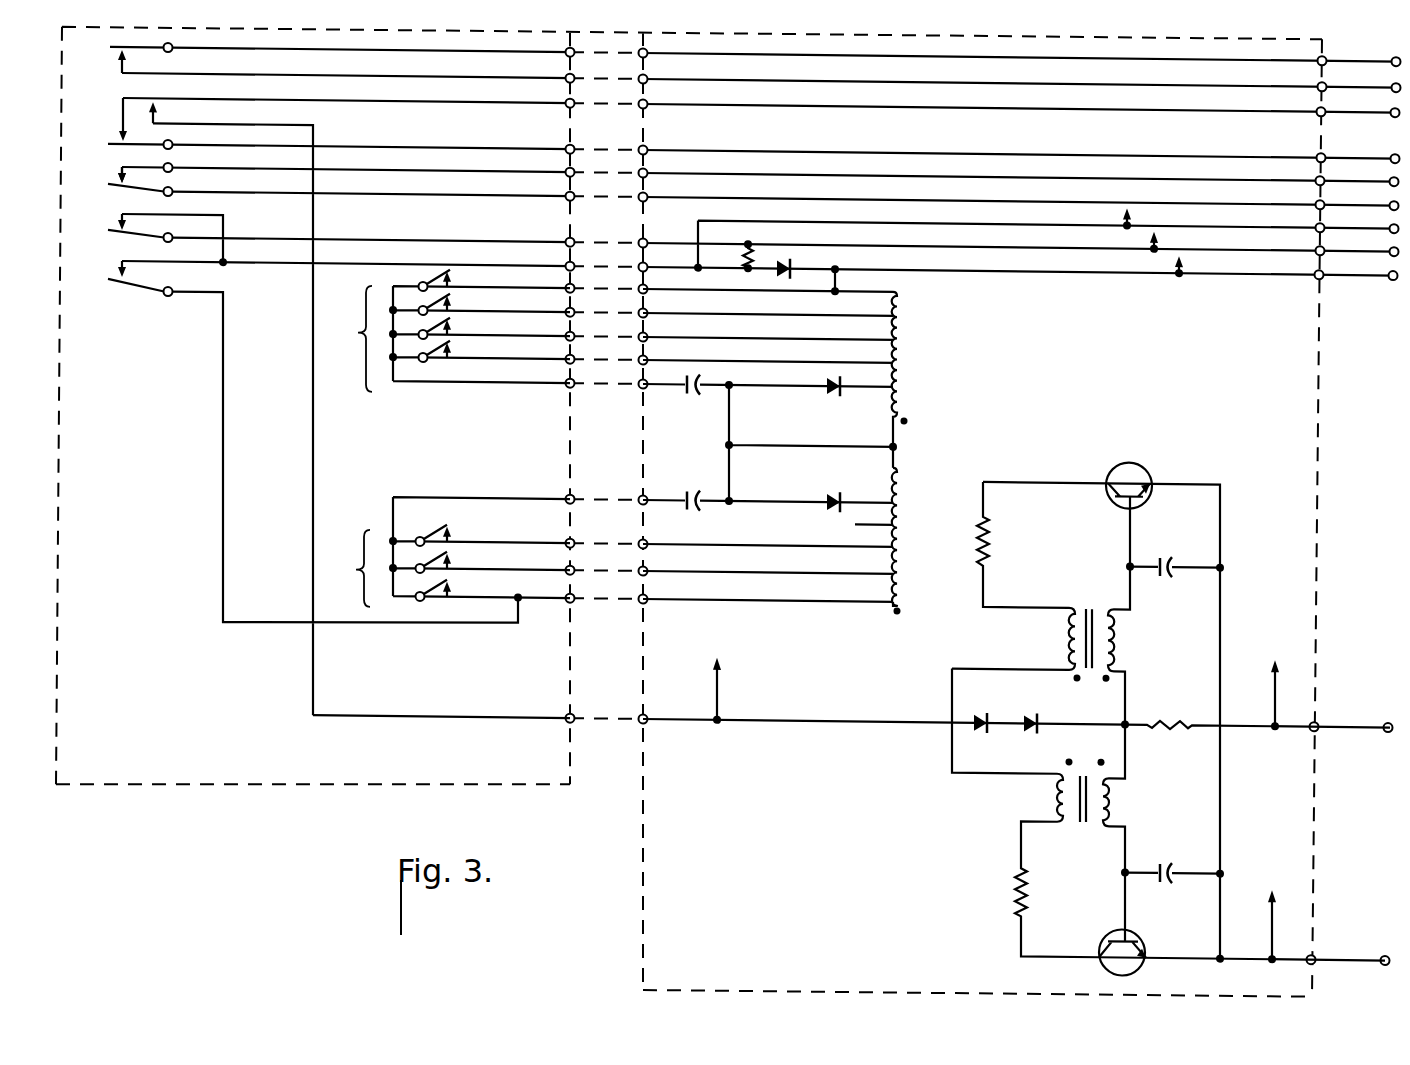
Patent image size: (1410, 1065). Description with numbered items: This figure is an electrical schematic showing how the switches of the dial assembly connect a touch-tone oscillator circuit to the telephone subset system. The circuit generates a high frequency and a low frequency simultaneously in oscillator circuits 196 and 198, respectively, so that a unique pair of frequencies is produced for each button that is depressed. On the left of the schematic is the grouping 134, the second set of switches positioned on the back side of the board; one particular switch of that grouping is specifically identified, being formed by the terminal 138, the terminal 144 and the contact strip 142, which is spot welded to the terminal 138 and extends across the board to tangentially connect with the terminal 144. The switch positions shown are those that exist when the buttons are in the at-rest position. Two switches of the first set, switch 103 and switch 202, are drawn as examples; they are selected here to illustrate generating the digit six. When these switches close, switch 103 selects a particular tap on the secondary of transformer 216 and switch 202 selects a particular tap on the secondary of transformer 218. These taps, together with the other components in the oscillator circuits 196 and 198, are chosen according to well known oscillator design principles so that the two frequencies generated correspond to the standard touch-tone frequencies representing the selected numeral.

The second set of switches 134 is at (104, 306).
The terminal 144 is at (173, 170).
The terminal 138 is at (173, 195).
The contact strip 142 is at (112, 191).
The switch 202 is at (452, 306).
The switch 103 is at (438, 527).
The transformer 218 is at (916, 360).
The transformer 216 is at (914, 509).
The oscillator circuit 198 is at (975, 651).
The oscillator circuit 196 is at (990, 878).